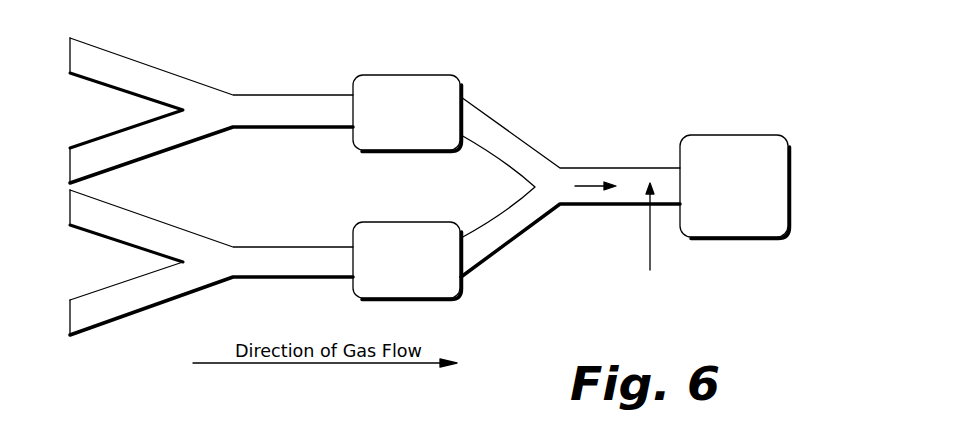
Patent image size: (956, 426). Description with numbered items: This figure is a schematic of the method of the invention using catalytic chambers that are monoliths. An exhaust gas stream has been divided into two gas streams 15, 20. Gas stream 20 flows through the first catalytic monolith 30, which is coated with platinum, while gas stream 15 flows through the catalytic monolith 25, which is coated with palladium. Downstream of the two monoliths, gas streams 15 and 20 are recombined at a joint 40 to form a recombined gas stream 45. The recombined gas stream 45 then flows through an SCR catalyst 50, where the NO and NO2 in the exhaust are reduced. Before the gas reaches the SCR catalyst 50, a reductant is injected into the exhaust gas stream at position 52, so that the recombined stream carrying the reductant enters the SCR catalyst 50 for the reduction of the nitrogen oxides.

The gas stream 15 is at (285, 94).
The gas stream 20 is at (285, 246).
The catalytic monolith 25 is at (425, 75).
The first catalytic monolith 30 is at (425, 222).
The joint 40 is at (550, 186).
The recombined gas stream 45 is at (590, 177).
The SCR catalyst 50 is at (730, 135).
The position 52 is at (646, 192).